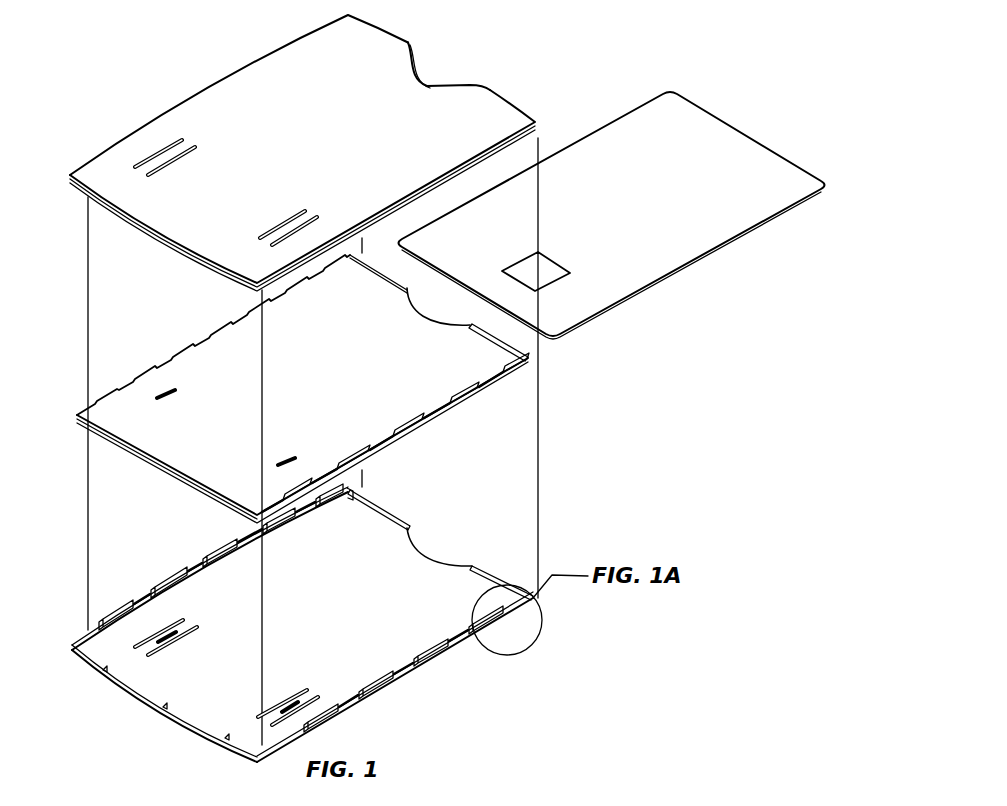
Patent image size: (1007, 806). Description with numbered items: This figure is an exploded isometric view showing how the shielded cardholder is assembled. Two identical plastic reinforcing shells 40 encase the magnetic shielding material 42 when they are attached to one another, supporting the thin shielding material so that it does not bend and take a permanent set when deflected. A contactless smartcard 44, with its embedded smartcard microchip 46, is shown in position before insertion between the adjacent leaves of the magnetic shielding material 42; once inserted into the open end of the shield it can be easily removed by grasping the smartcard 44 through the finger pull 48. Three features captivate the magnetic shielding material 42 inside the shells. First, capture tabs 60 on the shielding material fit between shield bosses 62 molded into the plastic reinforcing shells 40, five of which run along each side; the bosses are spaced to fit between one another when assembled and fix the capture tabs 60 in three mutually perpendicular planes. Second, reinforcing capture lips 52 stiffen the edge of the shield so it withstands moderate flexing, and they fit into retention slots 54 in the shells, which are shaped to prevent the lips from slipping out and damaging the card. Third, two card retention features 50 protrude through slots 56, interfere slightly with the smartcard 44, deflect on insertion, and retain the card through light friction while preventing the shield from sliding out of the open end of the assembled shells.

The plastic reinforcing shell 40 is at (223, 82).
The magnetic shielding material 42 is at (179, 476).
The smartcard 44 is at (758, 142).
The smartcard microchip 46 is at (559, 263).
The finger pull 48 is at (428, 78).
The card retention feature 50 is at (282, 220).
The reinforcing capture lip 52 is at (530, 360).
The retention slot 54 is at (494, 570).
The slot 56 is at (283, 463).
The capture tab 60 is at (227, 325).
The shield boss 62 is at (190, 590).